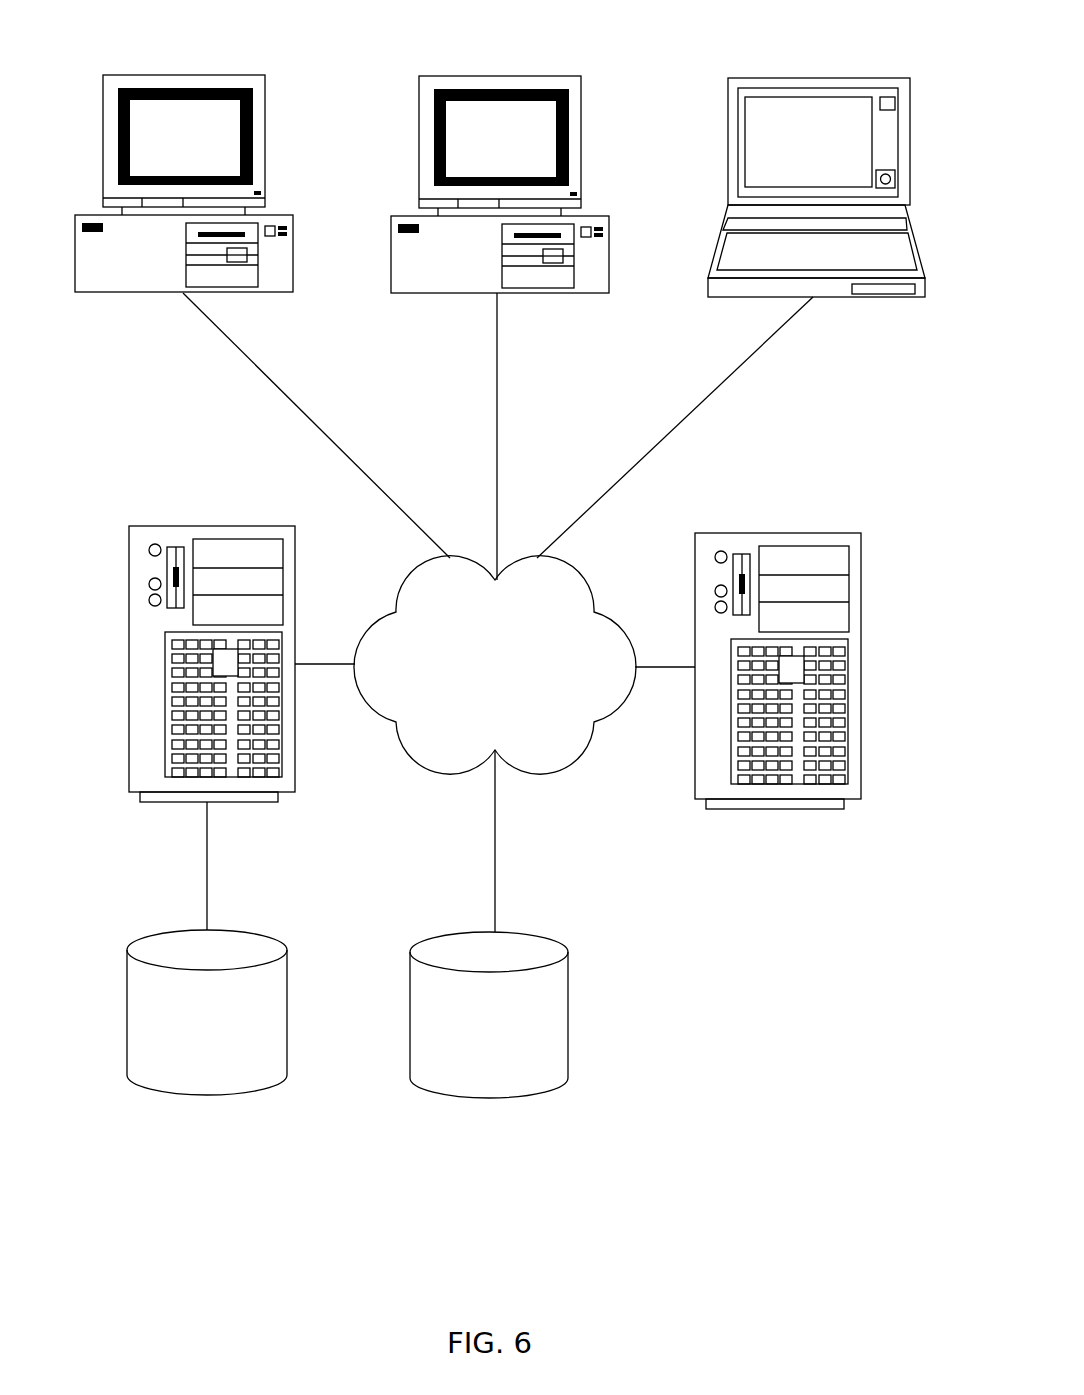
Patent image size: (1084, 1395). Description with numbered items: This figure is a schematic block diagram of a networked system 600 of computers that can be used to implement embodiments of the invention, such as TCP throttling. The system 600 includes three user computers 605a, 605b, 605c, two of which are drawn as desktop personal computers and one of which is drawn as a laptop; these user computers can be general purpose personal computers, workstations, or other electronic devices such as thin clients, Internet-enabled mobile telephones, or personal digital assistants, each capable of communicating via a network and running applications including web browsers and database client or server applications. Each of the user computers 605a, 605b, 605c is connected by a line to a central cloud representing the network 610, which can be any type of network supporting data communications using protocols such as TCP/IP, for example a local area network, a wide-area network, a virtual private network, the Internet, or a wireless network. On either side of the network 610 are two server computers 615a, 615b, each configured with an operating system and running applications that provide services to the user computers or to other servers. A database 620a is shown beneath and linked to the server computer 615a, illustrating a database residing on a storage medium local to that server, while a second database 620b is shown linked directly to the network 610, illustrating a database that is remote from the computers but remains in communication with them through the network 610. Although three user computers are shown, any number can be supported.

The system 600 is at (497, 613).
The user computer 605a is at (293, 238).
The user computer 605b is at (392, 240).
The user computer 605c is at (728, 188).
The network 610 is at (533, 777).
The server computer 615a is at (129, 663).
The server computer 615b is at (861, 670).
The database 620a is at (207, 1095).
The database 620b is at (489, 1097).